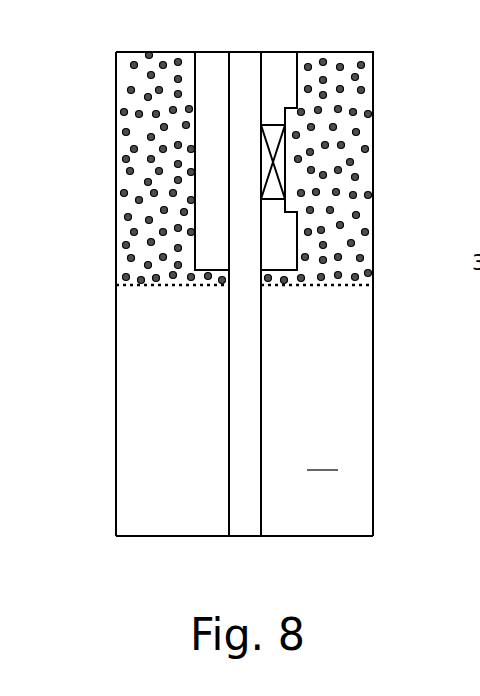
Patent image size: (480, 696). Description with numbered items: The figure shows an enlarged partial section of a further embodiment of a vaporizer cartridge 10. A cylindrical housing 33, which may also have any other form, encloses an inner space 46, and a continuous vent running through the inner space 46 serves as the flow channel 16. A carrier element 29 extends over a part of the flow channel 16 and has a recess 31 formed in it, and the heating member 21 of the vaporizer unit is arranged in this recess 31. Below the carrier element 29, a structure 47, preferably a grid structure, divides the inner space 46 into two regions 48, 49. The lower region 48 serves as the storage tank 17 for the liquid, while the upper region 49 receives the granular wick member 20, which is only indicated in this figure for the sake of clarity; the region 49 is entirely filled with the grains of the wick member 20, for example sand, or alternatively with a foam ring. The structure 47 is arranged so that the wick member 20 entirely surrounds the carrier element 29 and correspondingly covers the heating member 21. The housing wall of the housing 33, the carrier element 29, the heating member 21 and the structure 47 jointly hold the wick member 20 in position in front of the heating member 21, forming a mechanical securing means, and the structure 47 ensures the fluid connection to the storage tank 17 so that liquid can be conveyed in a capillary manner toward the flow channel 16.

The vaporizer cartridge 10 is at (411, 61).
The flow channel 16 is at (245, 525).
The storage tank 17 is at (301, 492).
The wick member 20 is at (346, 85).
The heating member 21 is at (283, 155).
The carrier element 29 is at (200, 125).
The recess 31 is at (286, 204).
The housing 33 is at (106, 102).
The inner space 46 is at (121, 330).
The structure 47 is at (325, 288).
The region 48 is at (128, 400).
The region 49 is at (125, 142).